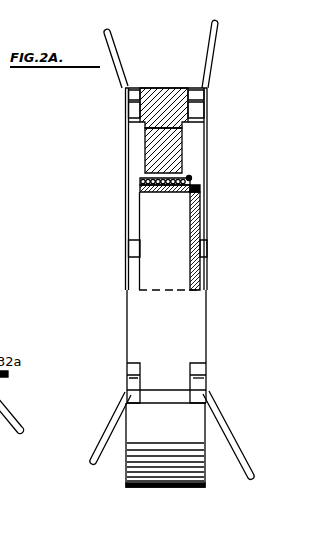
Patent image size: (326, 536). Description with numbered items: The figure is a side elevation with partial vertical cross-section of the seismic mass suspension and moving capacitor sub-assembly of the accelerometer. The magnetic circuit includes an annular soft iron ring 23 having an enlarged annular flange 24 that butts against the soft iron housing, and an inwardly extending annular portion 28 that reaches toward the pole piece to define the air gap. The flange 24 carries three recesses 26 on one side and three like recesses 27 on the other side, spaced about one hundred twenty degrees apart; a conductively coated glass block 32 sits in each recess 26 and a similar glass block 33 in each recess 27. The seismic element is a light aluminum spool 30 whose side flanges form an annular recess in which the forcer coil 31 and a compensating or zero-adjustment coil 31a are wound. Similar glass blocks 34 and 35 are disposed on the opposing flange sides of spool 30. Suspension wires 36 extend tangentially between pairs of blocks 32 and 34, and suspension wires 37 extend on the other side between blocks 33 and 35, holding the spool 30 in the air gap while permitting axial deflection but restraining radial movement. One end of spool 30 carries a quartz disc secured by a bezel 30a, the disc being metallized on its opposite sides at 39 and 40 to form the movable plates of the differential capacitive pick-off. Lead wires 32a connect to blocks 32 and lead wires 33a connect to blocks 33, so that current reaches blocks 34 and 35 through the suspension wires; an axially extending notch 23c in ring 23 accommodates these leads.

The annular soft iron ring 23 is at (188, 487).
The axially extending notch 23c is at (158, 404).
The enlarged annular flange 24 is at (186, 123).
The recesses 26 is at (196, 96).
The recesses 27 is at (136, 94).
The inwardly extending annular portion 28 is at (170, 158).
The spool 30 is at (158, 196).
The bezel 30a is at (200, 188).
The forcer coil 31 is at (148, 186).
The compensating coil 31a is at (192, 181).
The glass block 32 is at (196, 112).
The wire leads 32a is at (210, 52).
The glass block 33 is at (136, 111).
The wire leads 33a is at (117, 54).
The glass block 34 is at (205, 245).
The glass block 35 is at (131, 246).
The suspension wire 36 is at (206, 206).
The suspension wire 37 is at (125, 157).
The metallized side 39 is at (204, 270).
The metallized side 40 is at (186, 268).